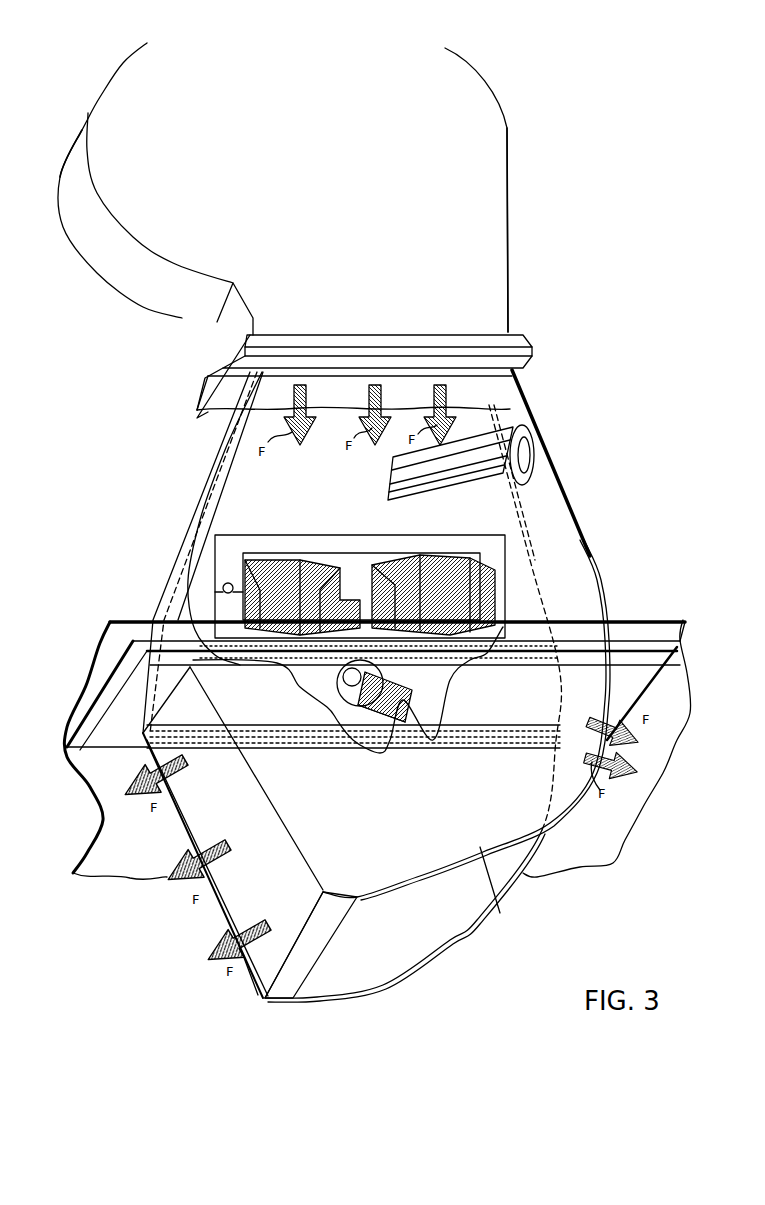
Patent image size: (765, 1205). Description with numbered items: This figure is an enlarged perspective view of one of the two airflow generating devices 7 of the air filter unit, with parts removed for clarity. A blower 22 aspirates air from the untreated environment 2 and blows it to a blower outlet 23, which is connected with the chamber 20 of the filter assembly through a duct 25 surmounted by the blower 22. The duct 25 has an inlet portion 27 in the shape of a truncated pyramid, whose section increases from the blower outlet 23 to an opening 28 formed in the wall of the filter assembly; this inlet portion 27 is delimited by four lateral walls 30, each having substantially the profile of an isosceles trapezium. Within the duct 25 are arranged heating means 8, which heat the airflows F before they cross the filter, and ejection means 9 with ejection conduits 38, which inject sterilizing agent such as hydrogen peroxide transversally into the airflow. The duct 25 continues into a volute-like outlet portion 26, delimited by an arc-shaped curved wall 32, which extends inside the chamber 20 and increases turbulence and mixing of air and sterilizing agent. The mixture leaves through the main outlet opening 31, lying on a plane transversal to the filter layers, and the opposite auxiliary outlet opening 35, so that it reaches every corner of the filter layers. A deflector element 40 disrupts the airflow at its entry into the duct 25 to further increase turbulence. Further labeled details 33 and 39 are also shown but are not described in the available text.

The untreated environment 2 is at (523, 262).
The airflow generating device 7 is at (78, 122).
The heating means 8 is at (270, 548).
The ejection means 9 is at (425, 722).
The chamber 20 is at (165, 832).
The blower 22 is at (178, 95).
The blower outlet 23 is at (500, 380).
The duct 25 is at (410, 388).
The outlet portion 26 is at (430, 852).
The inlet portion 27 is at (283, 381).
The opening 28 is at (172, 712).
The lateral wall 30 is at (345, 378).
The main outlet opening 31 is at (258, 818).
The curved wall 32 is at (357, 972).
The rim edge 33 is at (492, 882).
The auxiliary outlet opening 35 is at (593, 712).
The ejection conduit 38 is at (372, 548).
The filter bag 39 is at (415, 690).
The deflector element 40 is at (460, 488).